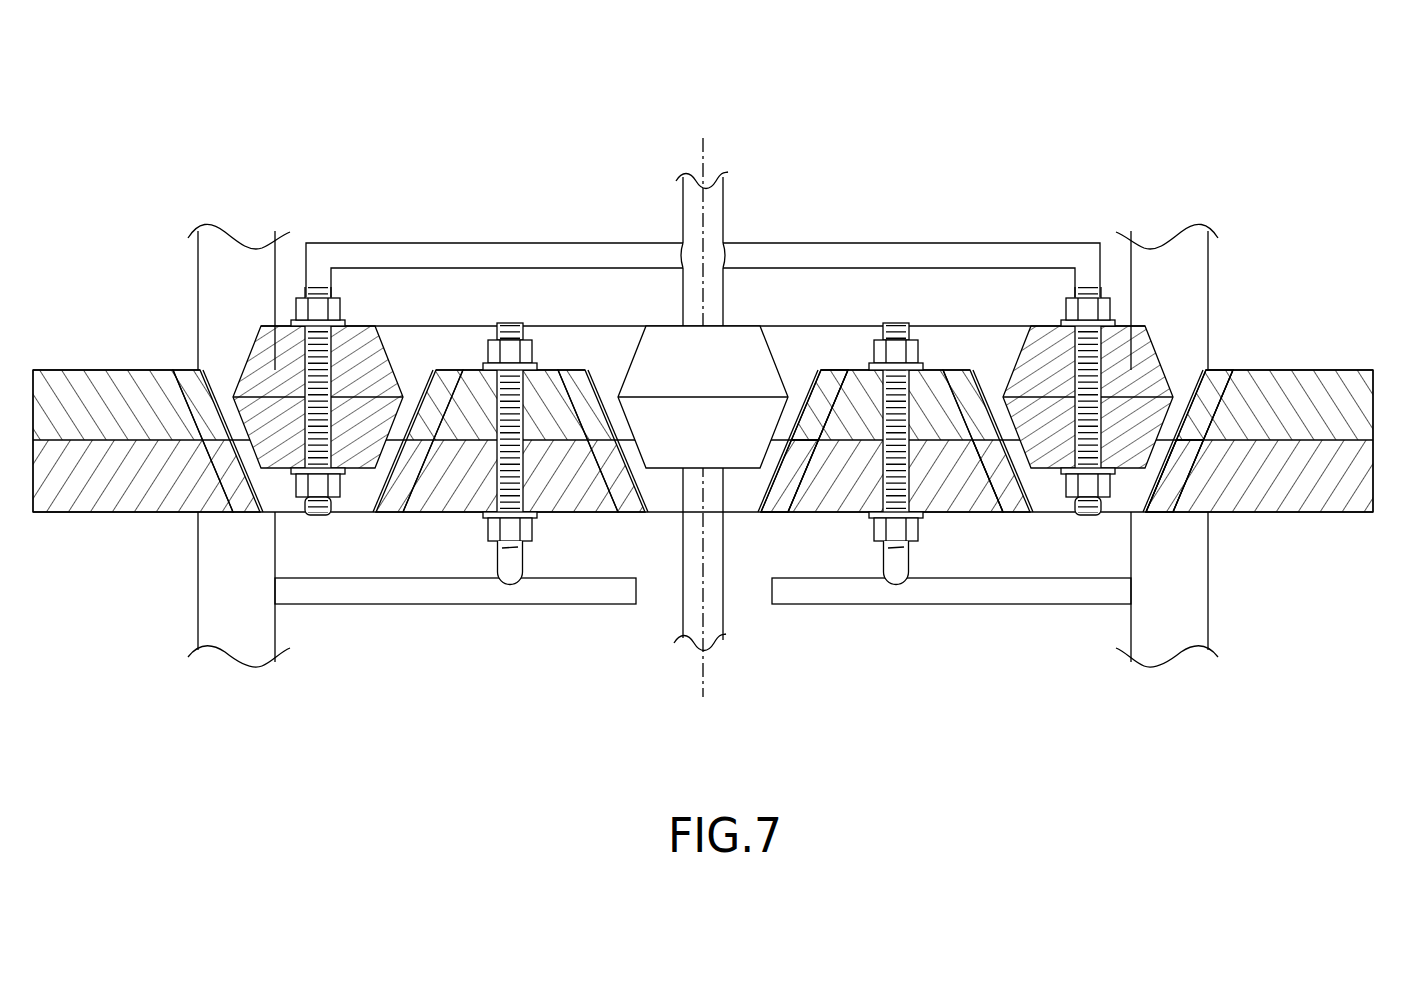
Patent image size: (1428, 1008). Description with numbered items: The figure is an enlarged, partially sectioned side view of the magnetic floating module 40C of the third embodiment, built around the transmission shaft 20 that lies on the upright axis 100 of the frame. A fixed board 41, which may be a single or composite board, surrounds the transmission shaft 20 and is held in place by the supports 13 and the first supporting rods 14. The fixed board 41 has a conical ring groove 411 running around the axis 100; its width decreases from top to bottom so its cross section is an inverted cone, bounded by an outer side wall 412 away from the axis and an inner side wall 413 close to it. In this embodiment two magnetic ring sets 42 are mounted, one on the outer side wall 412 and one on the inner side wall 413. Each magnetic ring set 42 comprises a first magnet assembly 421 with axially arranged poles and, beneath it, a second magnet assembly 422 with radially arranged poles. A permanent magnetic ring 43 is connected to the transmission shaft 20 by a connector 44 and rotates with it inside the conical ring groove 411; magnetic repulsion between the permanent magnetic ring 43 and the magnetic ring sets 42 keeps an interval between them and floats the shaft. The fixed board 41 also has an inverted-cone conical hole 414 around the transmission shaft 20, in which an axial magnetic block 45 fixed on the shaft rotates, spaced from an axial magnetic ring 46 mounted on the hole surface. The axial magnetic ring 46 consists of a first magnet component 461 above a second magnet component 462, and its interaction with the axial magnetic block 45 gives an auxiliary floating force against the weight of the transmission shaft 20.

The axis 100 is at (703, 138).
The supports 13 is at (205, 578).
The first supporting rods 14 is at (400, 593).
The transmission shaft 20 is at (717, 220).
The magnetic floating module 40C is at (1305, 292).
The fixed board 41 is at (1333, 367).
The conical ring groove 411 is at (1182, 384).
The outer side wall 412 is at (1173, 497).
The inner side wall 413 is at (998, 500).
The conical hole 414 is at (597, 382).
The magnetic ring set 42 is at (958, 362).
The first magnet assembly 421 is at (1222, 370).
The second magnet assembly 422 is at (1160, 515).
The permanent magnetic ring 43 is at (1120, 322).
The connector 44 is at (853, 250).
The axial magnetic block 45 is at (660, 322).
The axial magnetic ring 46 is at (815, 382).
The first magnet component 461 is at (838, 369).
The second magnet component 462 is at (768, 518).